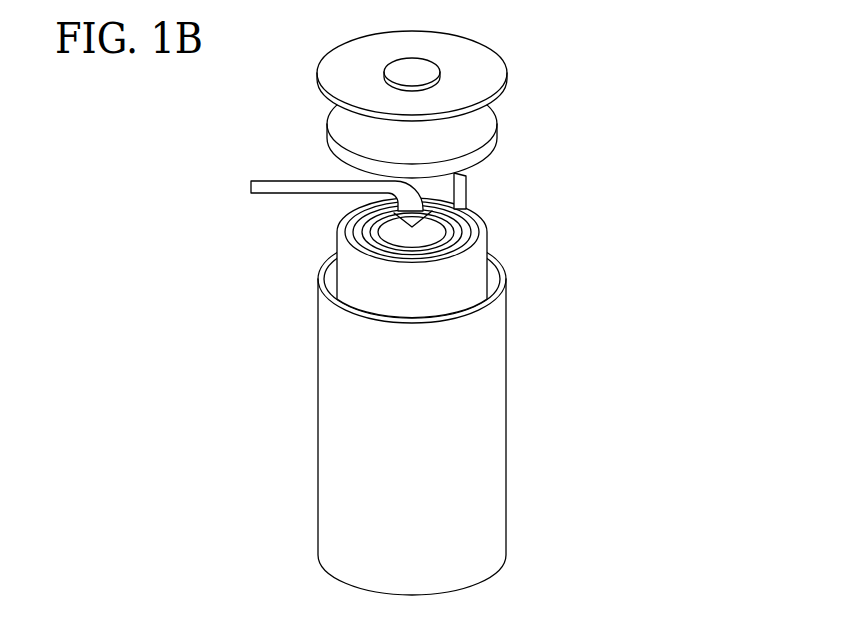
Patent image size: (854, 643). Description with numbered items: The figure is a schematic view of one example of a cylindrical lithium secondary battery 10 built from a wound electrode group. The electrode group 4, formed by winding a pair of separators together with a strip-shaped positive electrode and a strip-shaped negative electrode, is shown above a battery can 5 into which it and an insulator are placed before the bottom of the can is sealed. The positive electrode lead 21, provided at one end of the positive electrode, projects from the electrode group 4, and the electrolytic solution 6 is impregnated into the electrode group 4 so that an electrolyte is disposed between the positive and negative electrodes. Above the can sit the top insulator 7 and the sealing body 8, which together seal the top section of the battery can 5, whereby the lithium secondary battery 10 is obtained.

The lithium secondary battery 10 is at (477, 313).
The electrode group 4 is at (348, 275).
The battery can 5 is at (348, 430).
The electrolytic solution 6 is at (278, 185).
The top insulator 7 is at (482, 132).
The sealing body 8 is at (480, 70).
The positive electrode lead 21 is at (461, 187).